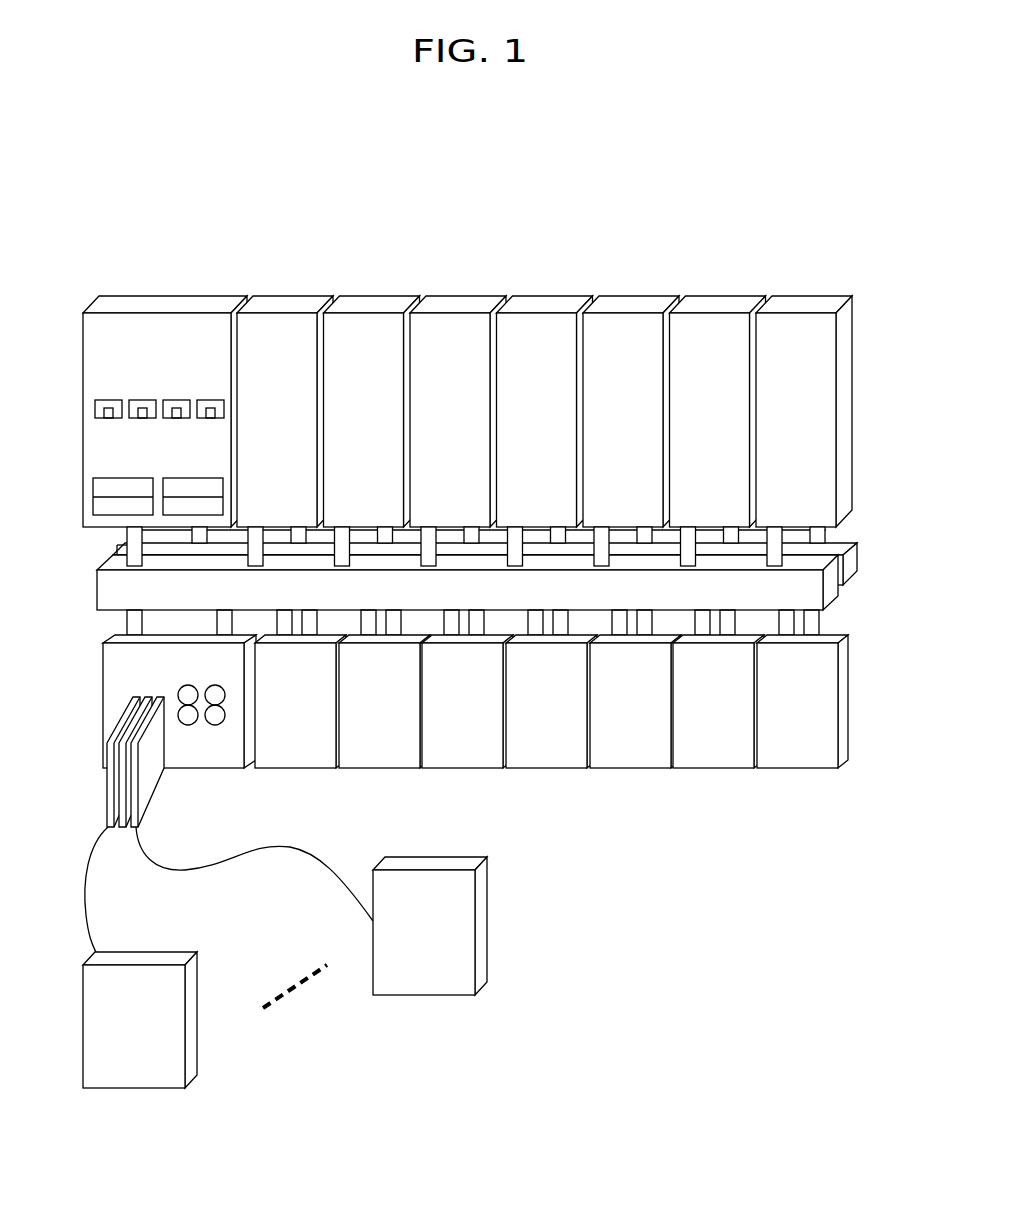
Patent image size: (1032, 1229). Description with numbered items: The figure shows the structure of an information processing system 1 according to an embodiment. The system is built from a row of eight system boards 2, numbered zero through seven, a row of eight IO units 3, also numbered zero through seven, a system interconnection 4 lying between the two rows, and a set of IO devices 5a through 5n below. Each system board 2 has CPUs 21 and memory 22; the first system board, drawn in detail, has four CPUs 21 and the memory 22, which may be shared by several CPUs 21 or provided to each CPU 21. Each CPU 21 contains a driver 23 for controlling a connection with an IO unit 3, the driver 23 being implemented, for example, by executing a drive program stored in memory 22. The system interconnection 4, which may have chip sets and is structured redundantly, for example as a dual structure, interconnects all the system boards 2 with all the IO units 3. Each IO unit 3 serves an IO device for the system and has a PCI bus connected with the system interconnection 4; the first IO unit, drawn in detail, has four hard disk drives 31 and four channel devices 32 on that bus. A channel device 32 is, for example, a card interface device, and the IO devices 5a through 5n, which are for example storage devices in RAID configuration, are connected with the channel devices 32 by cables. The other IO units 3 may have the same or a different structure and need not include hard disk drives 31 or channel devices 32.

The information processing system 1 is at (806, 232).
The system board 2 is at (141, 296).
The CPU 21 is at (97, 404).
The memory 22 is at (183, 479).
The driver 23 is at (108, 419).
The IO unit 3 is at (103, 680).
The hard disk drive 31 is at (199, 724).
The channel device 32 is at (108, 775).
The system interconnection 4 is at (842, 590).
The IO device 5a is at (197, 988).
The IO device 5n is at (487, 908).